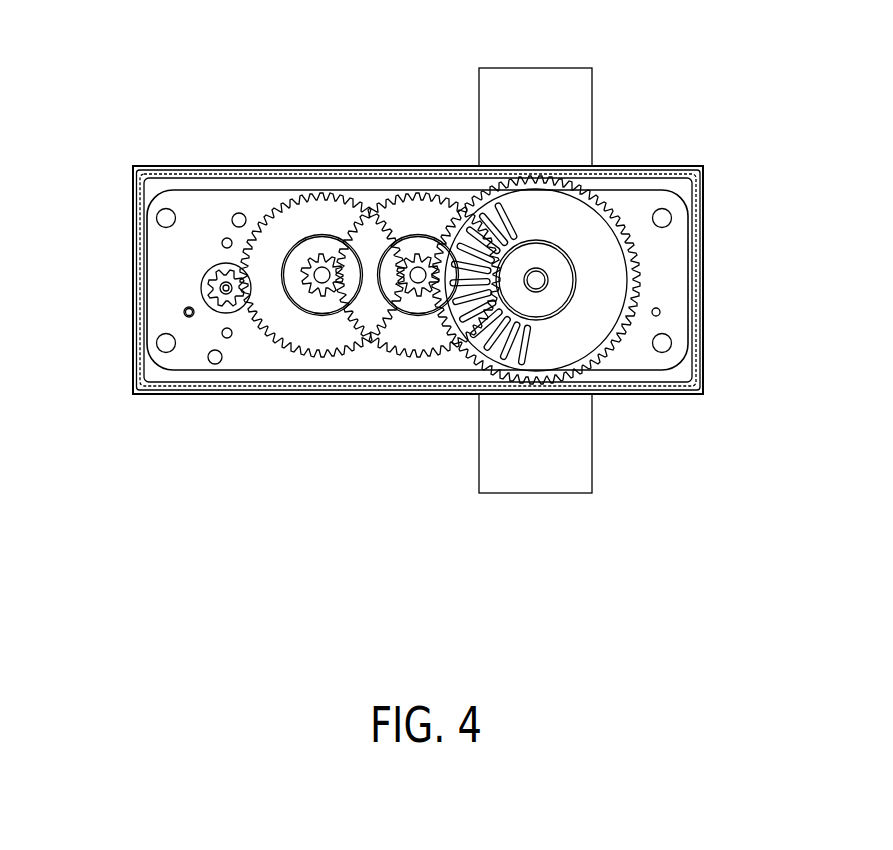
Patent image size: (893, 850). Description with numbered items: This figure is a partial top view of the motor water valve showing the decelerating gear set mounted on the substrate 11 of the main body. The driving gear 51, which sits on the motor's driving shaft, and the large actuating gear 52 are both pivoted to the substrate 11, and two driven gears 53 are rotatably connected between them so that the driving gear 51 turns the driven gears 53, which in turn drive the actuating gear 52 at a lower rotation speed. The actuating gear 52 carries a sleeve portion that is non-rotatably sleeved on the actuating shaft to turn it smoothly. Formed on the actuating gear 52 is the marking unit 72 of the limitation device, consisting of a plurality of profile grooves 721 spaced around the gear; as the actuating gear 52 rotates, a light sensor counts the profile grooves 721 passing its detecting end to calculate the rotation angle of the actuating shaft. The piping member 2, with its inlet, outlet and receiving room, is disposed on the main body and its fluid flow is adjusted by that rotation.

The piping member 2 is at (604, 452).
The substrate 11 is at (160, 264).
The driving gear 51 is at (215, 272).
The actuating gear 52 is at (603, 259).
The driven gear 53 is at (303, 222).
The marking unit 72 is at (547, 185).
The profile grooves 721 is at (465, 245).